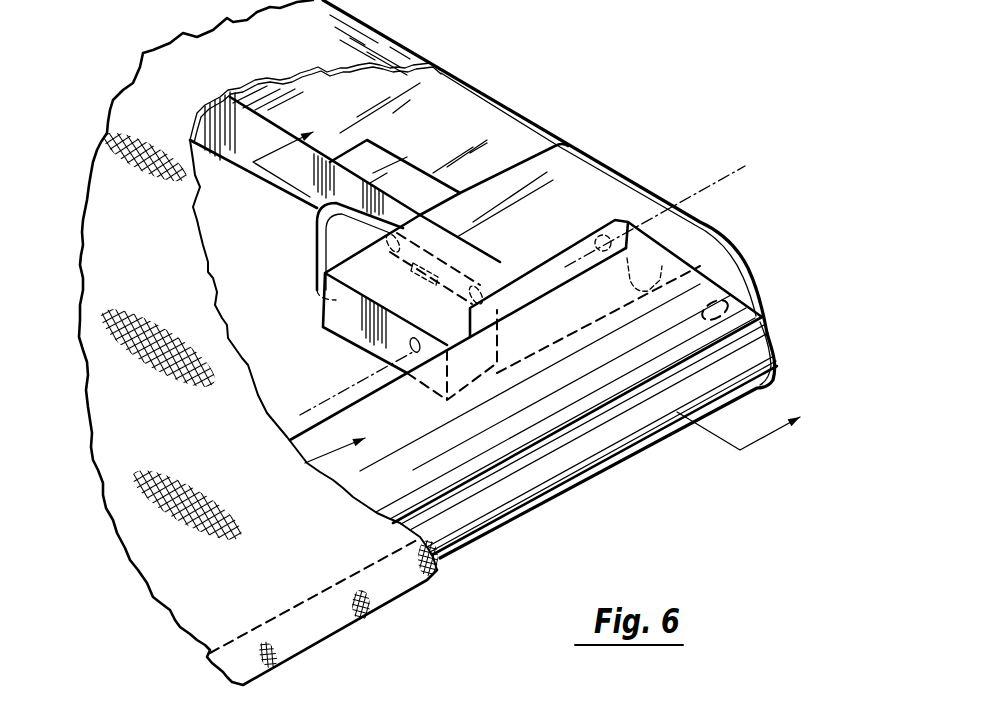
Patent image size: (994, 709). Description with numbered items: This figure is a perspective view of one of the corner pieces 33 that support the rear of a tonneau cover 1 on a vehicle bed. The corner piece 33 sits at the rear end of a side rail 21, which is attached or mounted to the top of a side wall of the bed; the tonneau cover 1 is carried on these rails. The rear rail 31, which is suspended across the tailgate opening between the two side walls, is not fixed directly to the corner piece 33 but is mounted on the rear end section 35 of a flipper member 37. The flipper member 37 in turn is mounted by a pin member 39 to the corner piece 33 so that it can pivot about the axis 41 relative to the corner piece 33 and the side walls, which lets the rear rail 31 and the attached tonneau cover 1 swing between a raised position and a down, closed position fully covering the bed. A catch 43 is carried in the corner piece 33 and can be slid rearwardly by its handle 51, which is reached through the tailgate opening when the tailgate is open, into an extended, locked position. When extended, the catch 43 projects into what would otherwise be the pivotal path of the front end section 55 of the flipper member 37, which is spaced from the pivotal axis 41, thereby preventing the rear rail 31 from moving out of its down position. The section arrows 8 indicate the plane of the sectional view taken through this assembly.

The tonneau cover 1 is at (153, 233).
The side rail 21 is at (453, 143).
The section line 8- 8 is at (513, 305).
The rear rail 31 is at (310, 460).
The corner piece 33 is at (753, 260).
The rear end section of flipper member 35 is at (572, 332).
The flipper member 37 is at (563, 313).
The pin member 39 is at (414, 338).
The pivotal axis 41 is at (337, 397).
The catch 43 is at (460, 283).
The handle of the catch 51 is at (316, 255).
The front end section of flipper member 55 is at (568, 212).